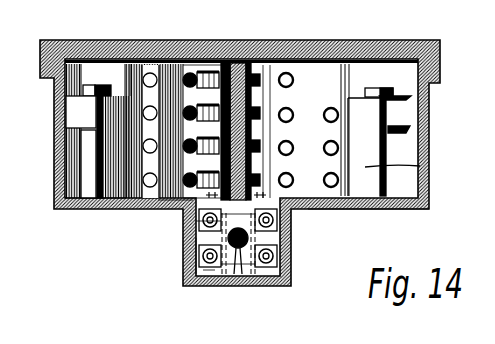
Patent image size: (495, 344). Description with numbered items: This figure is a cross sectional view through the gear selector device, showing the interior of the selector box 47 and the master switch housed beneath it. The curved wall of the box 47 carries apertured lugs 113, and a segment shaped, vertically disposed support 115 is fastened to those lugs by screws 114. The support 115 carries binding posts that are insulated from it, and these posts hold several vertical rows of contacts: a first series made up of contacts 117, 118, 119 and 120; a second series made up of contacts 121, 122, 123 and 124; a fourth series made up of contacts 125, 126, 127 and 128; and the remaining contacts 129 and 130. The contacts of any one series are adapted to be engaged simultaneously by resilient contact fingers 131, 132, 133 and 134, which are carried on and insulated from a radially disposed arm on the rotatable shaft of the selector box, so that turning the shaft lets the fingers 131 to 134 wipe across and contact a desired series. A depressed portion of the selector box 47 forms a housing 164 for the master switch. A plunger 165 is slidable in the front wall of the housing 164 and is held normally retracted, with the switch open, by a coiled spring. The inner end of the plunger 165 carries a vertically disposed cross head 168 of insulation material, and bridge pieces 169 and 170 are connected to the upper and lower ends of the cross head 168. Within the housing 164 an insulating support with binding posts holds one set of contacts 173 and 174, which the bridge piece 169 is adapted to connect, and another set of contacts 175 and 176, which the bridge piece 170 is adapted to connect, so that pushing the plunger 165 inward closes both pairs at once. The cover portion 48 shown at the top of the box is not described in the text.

The box of the gear selector device 47 is at (422, 198).
The housing cover 48 is at (433, 46).
The apertured lugs 113 is at (381, 110).
The screws 114 is at (386, 84).
The segment shaped vertically disposed support 115 is at (412, 158).
The contact of the first series 117 is at (152, 57).
The contact of the first series 118 is at (122, 118).
The contact of the first series 119 is at (123, 151).
The contact of the first series 120 is at (56, 201).
The contact of the second series 121 is at (189, 102).
The contact of the second series 122 is at (152, 196).
The contact of the second series 123 is at (160, 196).
The contact of the second series 124 is at (167, 196).
The contact of the fourth series 125 is at (282, 66).
The contact of the fourth series 126 is at (287, 101).
The contact of the fourth series 127 is at (285, 134).
The contact of the fourth series 128 is at (285, 168).
The remaining contact 129 is at (331, 139).
The remaining contact 130 is at (331, 172).
The resilient contact finger 131 is at (212, 57).
The resilient contact finger 132 is at (233, 54).
The resilient contact finger 133 is at (266, 60).
The resilient contact finger 134 is at (177, 196).
The housing for the master switch 164 is at (283, 250).
The plunger 165 is at (232, 268).
The cross head 168 is at (247, 270).
The bridge piece 169 is at (283, 230).
The bridge piece 170 is at (262, 272).
The contact 173 is at (178, 218).
The contact 174 is at (288, 213).
The contact 175 is at (196, 264).
The contact 176 is at (283, 268).